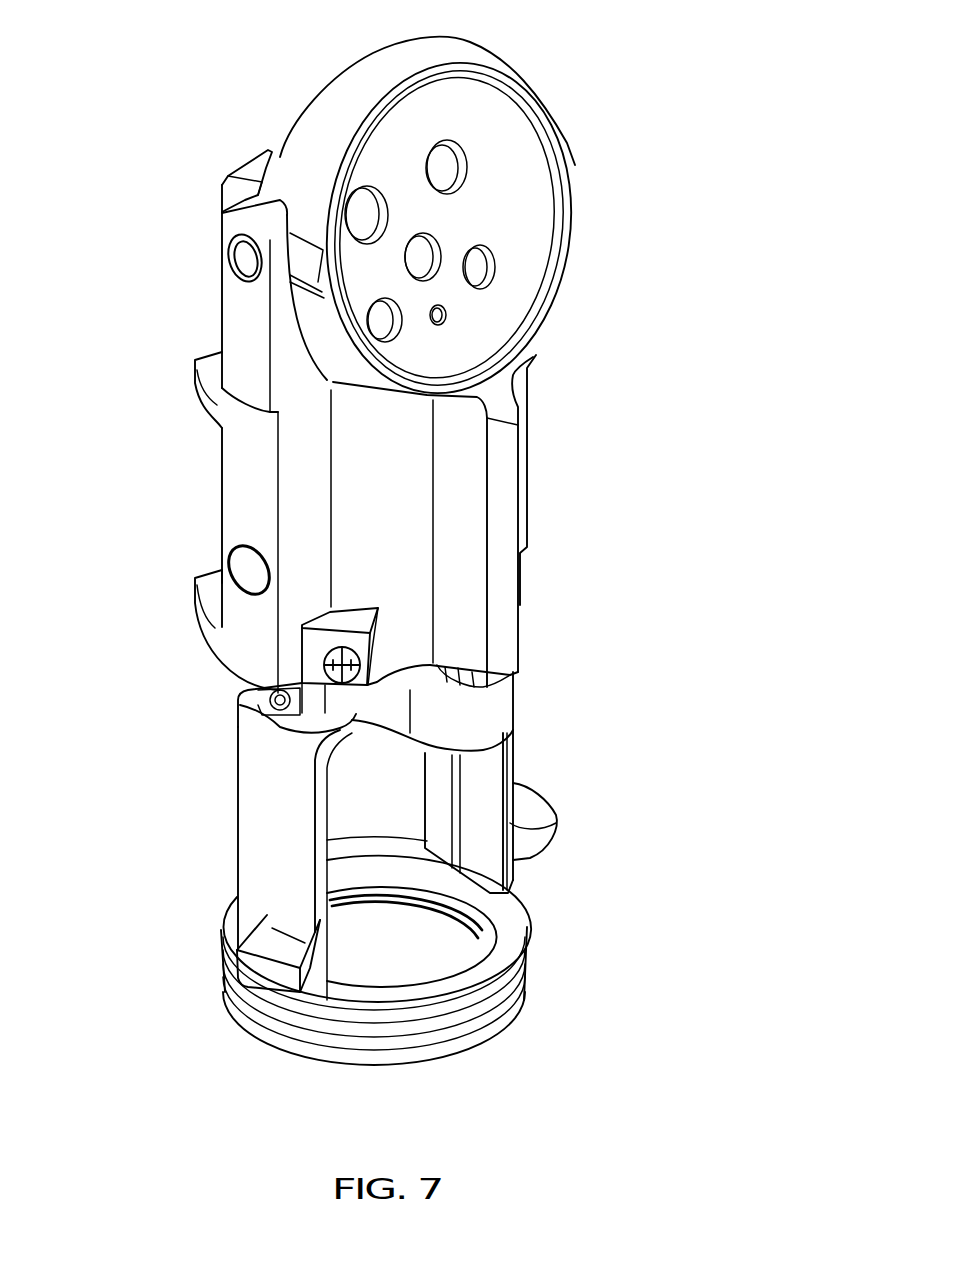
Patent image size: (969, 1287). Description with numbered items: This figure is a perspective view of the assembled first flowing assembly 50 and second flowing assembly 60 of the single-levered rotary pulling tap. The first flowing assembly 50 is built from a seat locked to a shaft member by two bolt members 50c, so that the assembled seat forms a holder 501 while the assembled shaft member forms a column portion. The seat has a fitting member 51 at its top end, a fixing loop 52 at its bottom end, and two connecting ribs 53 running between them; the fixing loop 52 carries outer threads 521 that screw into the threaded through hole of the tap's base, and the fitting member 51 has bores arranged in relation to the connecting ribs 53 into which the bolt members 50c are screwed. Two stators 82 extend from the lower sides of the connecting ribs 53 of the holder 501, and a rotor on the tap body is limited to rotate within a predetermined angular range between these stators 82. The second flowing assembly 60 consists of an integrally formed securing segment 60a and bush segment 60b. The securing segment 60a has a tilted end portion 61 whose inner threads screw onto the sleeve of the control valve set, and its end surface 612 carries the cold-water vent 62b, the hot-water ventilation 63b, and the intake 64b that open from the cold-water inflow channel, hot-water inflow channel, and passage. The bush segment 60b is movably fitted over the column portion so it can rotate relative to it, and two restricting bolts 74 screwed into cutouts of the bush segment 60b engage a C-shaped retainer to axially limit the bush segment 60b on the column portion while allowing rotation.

The first flowing assembly 50 is at (603, 777).
The bolt member 50c is at (260, 702).
The fitting member 51 is at (372, 717).
The holder 501 is at (240, 773).
The fixing loop 52 is at (473, 1023).
The outer threads 521 is at (480, 1026).
The connecting rib 53 is at (513, 757).
The second flowing assembly 60 is at (560, 452).
The securing segment 60a is at (315, 102).
The bush segment 60b is at (241, 492).
The tilted end portion 61 is at (398, 62).
The end surface 612 is at (502, 199).
The cold-water vent 62b is at (357, 214).
The hot-water ventilation 63b is at (458, 157).
The intake 64b is at (427, 258).
The restricting bolt 74 is at (327, 658).
The stator 82 is at (547, 837).